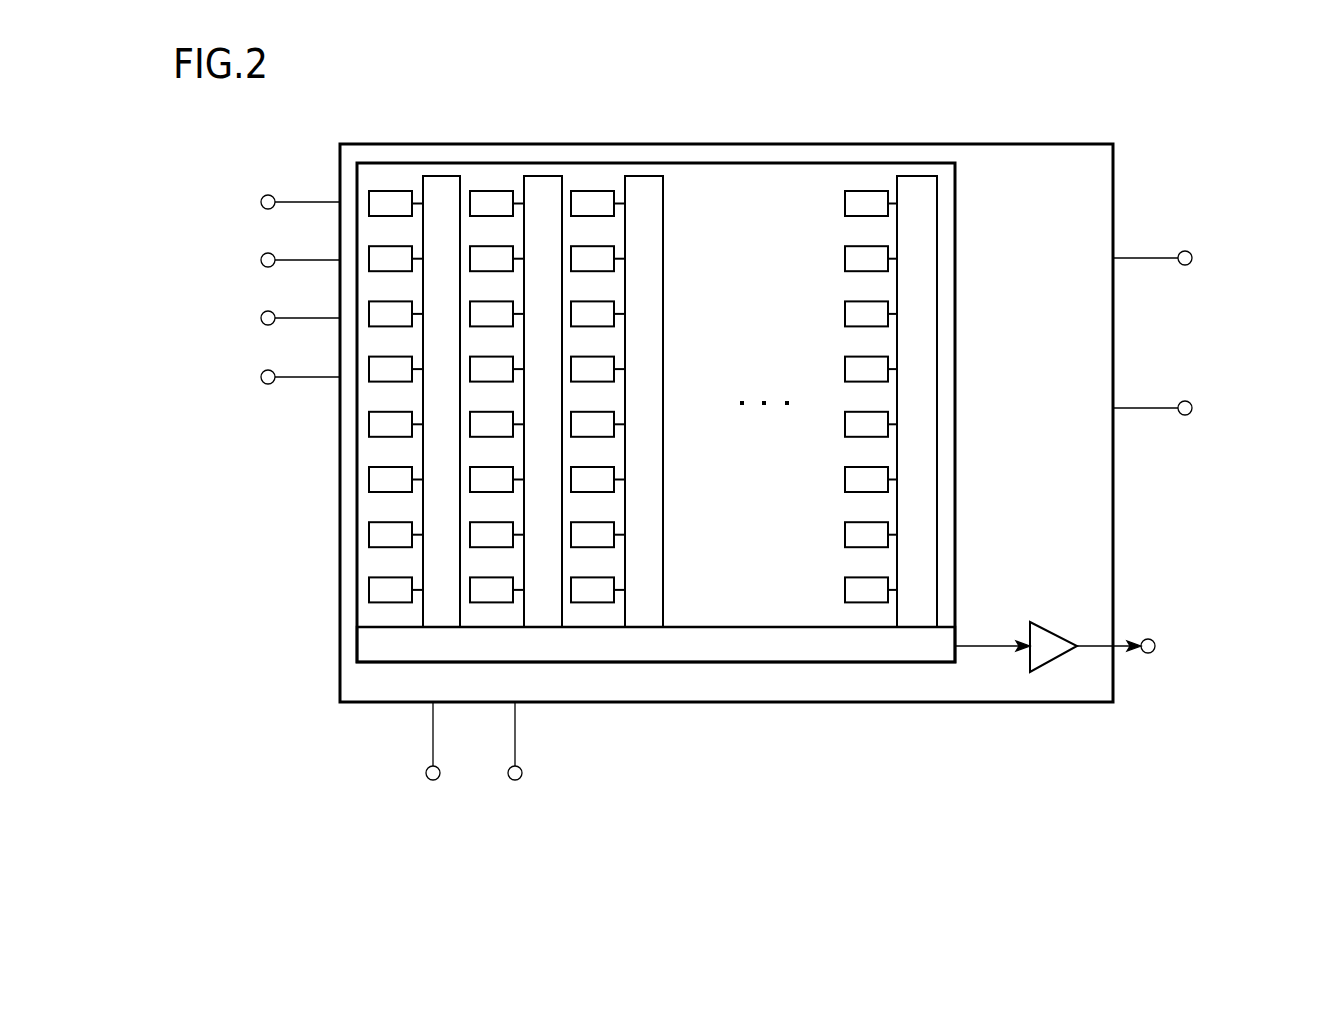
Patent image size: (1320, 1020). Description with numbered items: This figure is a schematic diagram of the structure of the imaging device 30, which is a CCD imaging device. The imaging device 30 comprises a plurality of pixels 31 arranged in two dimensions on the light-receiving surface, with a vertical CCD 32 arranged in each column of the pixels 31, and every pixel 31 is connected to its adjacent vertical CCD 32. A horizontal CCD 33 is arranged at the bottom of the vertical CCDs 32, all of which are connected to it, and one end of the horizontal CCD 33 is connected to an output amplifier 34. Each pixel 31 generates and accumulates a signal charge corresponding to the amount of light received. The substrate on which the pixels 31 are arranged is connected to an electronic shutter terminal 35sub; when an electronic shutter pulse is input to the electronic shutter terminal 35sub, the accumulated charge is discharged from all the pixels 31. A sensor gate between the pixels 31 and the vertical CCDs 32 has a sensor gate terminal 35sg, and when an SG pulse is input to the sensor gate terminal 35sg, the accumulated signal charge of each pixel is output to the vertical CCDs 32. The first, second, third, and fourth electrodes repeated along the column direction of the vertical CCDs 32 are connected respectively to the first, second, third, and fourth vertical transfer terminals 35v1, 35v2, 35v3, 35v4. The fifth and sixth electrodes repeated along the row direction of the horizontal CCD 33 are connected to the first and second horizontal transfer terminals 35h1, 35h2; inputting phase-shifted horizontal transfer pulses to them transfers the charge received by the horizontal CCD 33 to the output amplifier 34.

The imaging device 30 is at (706, 144).
The pixel 31 is at (490, 191).
The vertical CCD 32 is at (638, 176).
The horizontal CCD 33 is at (717, 663).
The output amplifier 34 is at (1054, 662).
The first vertical transfer terminal 35v1 is at (261, 202).
The second vertical transfer terminal 35v2 is at (261, 260).
The third vertical transfer terminal 35v3 is at (261, 318).
The fourth vertical transfer terminal 35v4 is at (261, 377).
The sensor gate terminal 35sg is at (1192, 258).
The electronic shutter terminal 35sub is at (1192, 408).
The first horizontal transfer terminal 35h1 is at (433, 780).
The second horizontal transfer terminal 35h2 is at (515, 780).